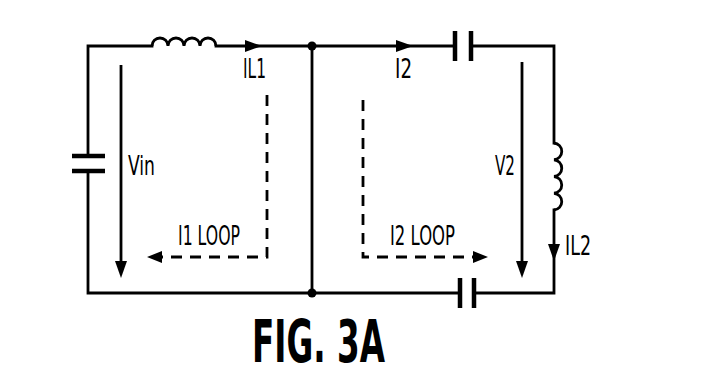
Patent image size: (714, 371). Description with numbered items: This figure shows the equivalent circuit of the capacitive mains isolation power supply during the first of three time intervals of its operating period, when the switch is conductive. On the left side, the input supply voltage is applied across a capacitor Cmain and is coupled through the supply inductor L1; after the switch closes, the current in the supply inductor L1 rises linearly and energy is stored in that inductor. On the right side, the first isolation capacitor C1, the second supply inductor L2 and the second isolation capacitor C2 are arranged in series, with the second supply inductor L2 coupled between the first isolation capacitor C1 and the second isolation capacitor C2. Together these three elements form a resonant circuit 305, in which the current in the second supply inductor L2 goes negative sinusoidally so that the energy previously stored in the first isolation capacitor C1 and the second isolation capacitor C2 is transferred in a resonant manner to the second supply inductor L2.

The resonant circuit 305 is at (446, 186).
The supply inductor L1 is at (184, 60).
The second supply inductor L2 is at (547, 176).
The first isolation capacitor C1 is at (461, 31).
The second isolation capacitor C2 is at (469, 307).
The main capacitor Cmain is at (68, 181).